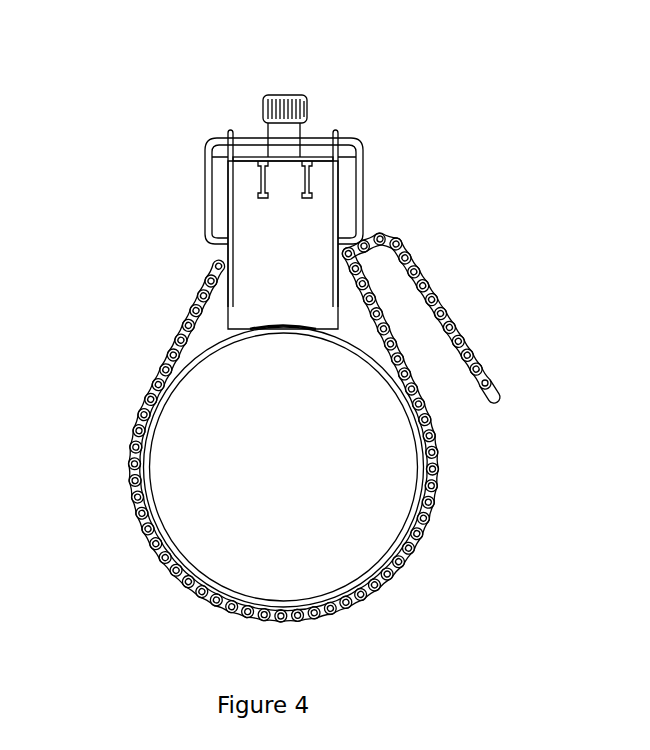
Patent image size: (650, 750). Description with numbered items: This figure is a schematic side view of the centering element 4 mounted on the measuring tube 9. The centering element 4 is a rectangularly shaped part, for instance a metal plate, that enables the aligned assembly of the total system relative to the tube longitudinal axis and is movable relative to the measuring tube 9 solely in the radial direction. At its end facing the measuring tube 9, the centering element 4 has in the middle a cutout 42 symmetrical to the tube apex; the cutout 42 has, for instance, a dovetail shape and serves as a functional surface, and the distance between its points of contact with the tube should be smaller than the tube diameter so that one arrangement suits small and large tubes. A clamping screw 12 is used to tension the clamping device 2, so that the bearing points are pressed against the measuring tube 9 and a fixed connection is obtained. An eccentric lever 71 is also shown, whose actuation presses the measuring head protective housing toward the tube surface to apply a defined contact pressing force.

The clamping device 2 is at (447, 477).
The centering element 4 is at (258, 260).
The measuring tube 9 is at (137, 515).
The clamping screw 12 is at (274, 84).
The cutout 42 is at (251, 324).
The eccentric lever 71 is at (377, 164).